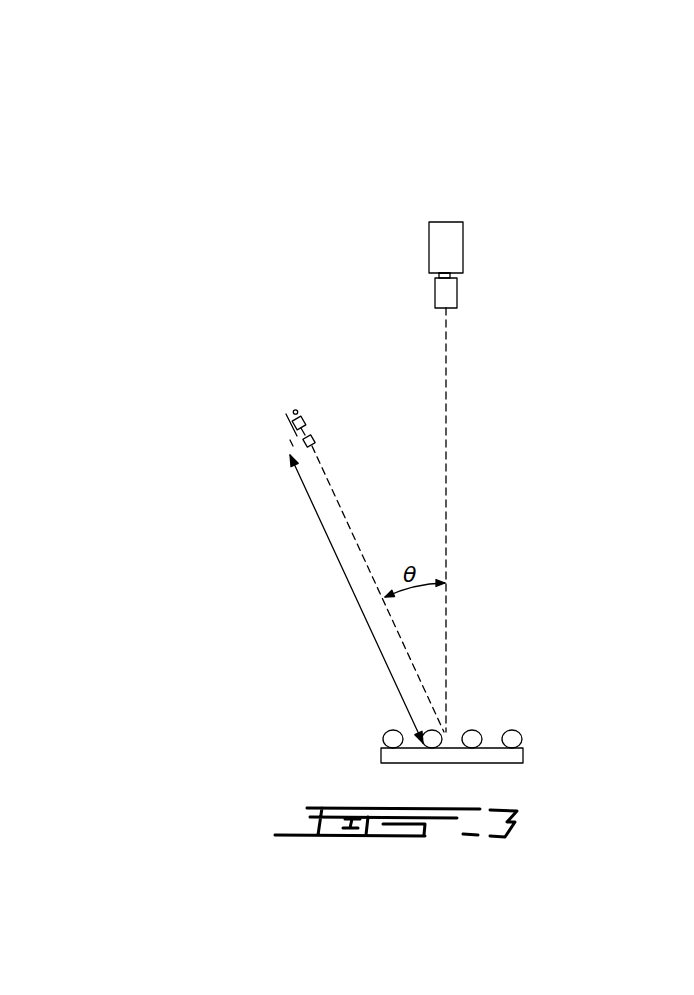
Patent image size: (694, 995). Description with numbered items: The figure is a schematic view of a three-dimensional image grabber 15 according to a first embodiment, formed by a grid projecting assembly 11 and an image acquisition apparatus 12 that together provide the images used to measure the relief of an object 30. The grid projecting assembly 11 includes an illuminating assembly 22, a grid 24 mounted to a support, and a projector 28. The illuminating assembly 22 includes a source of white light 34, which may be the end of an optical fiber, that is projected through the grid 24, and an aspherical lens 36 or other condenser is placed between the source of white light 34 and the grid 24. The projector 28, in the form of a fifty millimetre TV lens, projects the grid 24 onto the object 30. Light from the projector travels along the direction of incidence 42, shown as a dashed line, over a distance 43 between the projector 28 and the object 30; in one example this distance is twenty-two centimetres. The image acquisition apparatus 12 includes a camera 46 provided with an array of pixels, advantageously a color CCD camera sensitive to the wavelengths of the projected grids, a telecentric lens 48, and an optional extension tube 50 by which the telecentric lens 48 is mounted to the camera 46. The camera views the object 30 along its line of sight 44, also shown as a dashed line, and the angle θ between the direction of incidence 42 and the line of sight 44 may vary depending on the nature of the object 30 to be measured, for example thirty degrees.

The grid projecting assembly 11 is at (197, 440).
The image acquisition apparatus 12 is at (503, 224).
The three-dimensional image grabber 15 is at (302, 203).
The illuminating assembly 22 is at (285, 428).
The grid 24 is at (305, 427).
The projector 28 is at (314, 445).
The object 30 is at (513, 755).
The source of white light 34 is at (295, 410).
The aspherical lens 36 is at (292, 440).
The direction of incidence of the light 42 is at (351, 531).
The distance 43 is at (318, 519).
The line of sight of the image acquisition apparatus 44 is at (447, 533).
The camera 46 is at (440, 233).
The telecentric lens 48 is at (448, 300).
The extension tube 50 is at (463, 273).